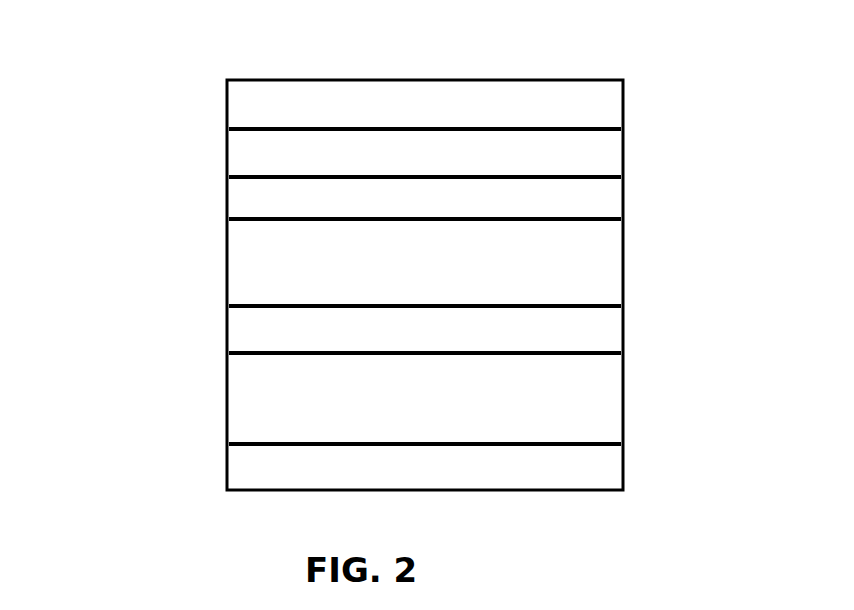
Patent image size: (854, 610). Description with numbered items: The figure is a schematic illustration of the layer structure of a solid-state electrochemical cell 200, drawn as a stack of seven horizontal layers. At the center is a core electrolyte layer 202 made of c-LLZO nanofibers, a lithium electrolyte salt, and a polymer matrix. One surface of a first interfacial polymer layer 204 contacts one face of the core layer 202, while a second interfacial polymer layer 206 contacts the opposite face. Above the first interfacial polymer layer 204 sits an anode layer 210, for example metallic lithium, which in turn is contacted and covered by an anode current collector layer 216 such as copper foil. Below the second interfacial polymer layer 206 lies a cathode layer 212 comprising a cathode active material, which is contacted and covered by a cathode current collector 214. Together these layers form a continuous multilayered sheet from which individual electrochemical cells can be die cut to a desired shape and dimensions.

The cell 200 is at (155, 222).
The anode current collector layer 216 is at (615, 101).
The anode layer 210 is at (603, 150).
The first interfacial polymer layer 204 is at (603, 198).
The core electrolyte layer 202 is at (610, 279).
The second interfacial polymer layer 206 is at (610, 328).
The cathode layer 212 is at (608, 402).
The cathode current collector 214 is at (608, 464).